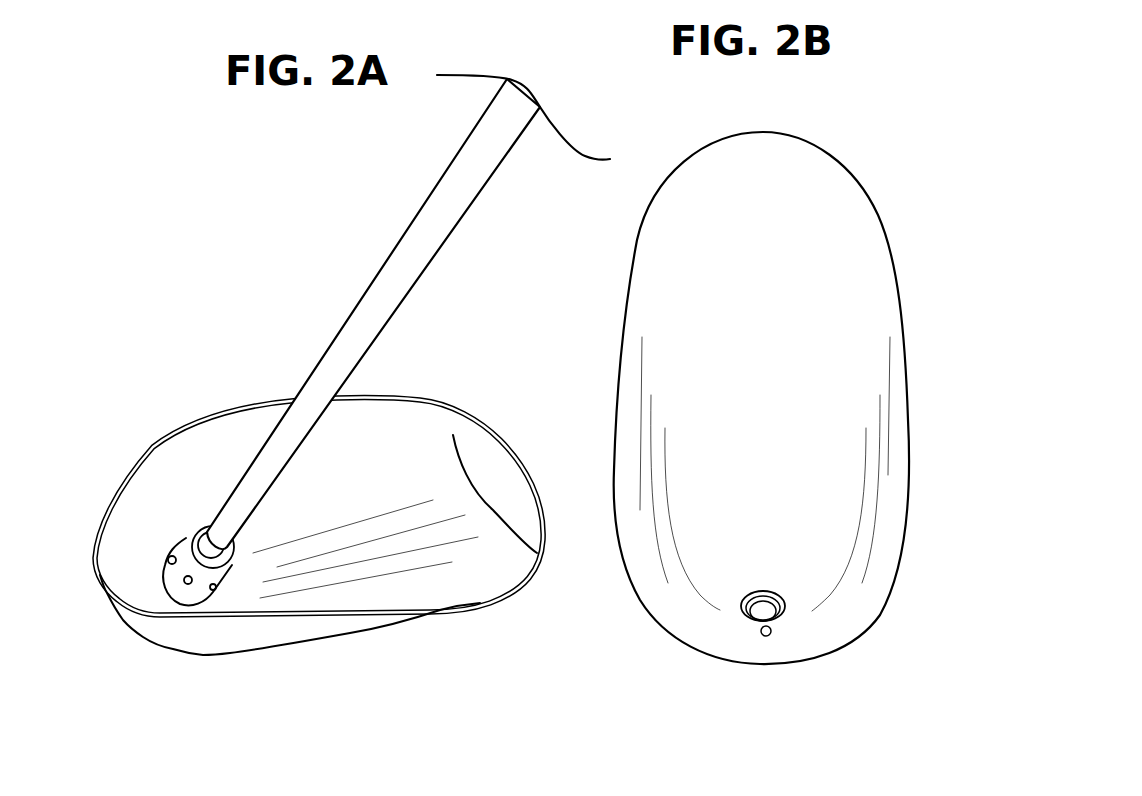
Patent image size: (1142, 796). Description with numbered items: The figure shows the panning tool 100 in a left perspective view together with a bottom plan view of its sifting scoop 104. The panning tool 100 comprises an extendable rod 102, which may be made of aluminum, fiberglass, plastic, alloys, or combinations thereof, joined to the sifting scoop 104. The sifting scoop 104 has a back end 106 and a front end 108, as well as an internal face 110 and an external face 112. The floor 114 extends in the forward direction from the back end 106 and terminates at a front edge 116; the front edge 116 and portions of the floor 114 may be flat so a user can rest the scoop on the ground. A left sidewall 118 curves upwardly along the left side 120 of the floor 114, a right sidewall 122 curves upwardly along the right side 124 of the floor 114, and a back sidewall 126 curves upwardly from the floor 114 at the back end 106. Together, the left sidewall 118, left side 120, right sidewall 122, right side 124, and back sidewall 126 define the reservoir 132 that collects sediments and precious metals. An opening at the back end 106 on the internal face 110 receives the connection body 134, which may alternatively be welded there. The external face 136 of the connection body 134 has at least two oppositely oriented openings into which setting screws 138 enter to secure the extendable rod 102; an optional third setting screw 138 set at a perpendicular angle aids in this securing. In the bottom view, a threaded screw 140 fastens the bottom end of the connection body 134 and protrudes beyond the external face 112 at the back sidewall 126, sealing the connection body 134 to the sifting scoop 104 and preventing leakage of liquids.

In FIG. 2A, the panning tool 100 is at (177, 192).
In FIG. 2A, the extendable rod 102 is at (396, 240).
In FIG. 2A, the sifting scoop 104 is at (480, 417).
In FIG. 2B, the sifting scoop 104 is at (897, 348).
In FIG. 2A, the back end 106 is at (176, 640).
In FIG. 2B, the back end 106 is at (673, 637).
In FIG. 2A, the front end 108 is at (488, 592).
In FIG. 2B, the front end 108 is at (797, 138).
In FIG. 2A, the internal face 110 is at (473, 445).
In FIG. 2A, the external face 112 is at (263, 640).
In FIG. 2B, the external face 112 is at (863, 440).
In FIG. 2A, the floor 114 is at (440, 539).
In FIG. 2B, the floor 114 is at (818, 215).
In FIG. 2A, the front edge 116 is at (453, 435).
In FIG. 2B, the front edge 116 is at (758, 145).
In FIG. 2A, the left sidewall 118 is at (158, 638).
In FIG. 2B, the left sidewall 118 is at (657, 470).
In FIG. 2A, the left side 120 is at (170, 643).
In FIG. 2B, the left side 120 is at (677, 543).
In FIG. 2A, the right sidewall 122 is at (220, 453).
In FIG. 2B, the right sidewall 122 is at (884, 528).
In FIG. 2A, the right side 124 is at (200, 477).
In FIG. 2B, the right side 124 is at (833, 570).
In FIG. 2A, the back sidewall 126 is at (120, 560).
In FIG. 2B, the back sidewall 126 is at (717, 598).
In FIG. 2A, the reservoir 132 is at (153, 419).
In FIG. 2A, the connection body 134 is at (170, 593).
In FIG. 2A, the external face 136 is at (172, 582).
In FIG. 2A, the setting screws 138 is at (170, 557).
In FIG. 2B, the threaded screw 140 is at (767, 632).